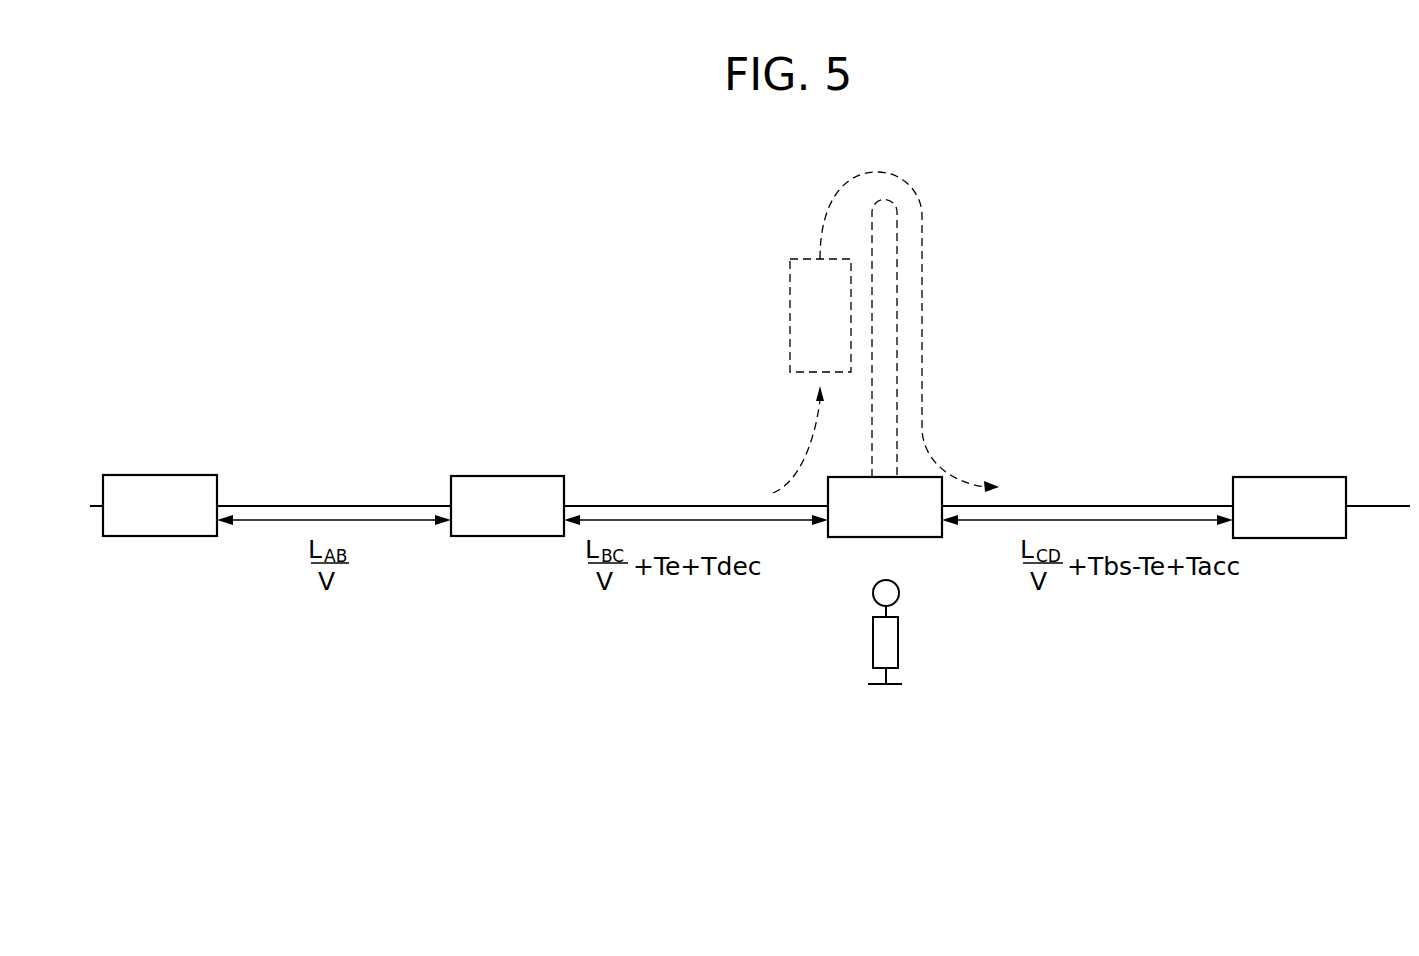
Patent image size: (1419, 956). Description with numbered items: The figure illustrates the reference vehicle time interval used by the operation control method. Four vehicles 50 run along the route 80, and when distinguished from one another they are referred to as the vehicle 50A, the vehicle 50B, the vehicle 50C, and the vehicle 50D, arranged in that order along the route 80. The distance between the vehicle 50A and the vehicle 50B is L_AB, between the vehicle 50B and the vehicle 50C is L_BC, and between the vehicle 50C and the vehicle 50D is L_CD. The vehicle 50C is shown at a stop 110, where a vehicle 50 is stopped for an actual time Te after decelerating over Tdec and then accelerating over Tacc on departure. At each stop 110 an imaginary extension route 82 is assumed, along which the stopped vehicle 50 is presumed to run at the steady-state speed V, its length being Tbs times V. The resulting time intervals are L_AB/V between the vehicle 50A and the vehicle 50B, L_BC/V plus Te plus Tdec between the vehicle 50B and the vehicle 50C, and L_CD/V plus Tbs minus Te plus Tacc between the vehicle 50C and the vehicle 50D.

The vehicle 50 is at (790, 316).
The vehicle 50A is at (157, 475).
The vehicle 50B is at (505, 476).
The vehicle 50C is at (910, 537).
The vehicle 50D is at (1286, 477).
The route 80 is at (337, 505).
The extension route 82 is at (897, 217).
The stop 110 is at (898, 640).